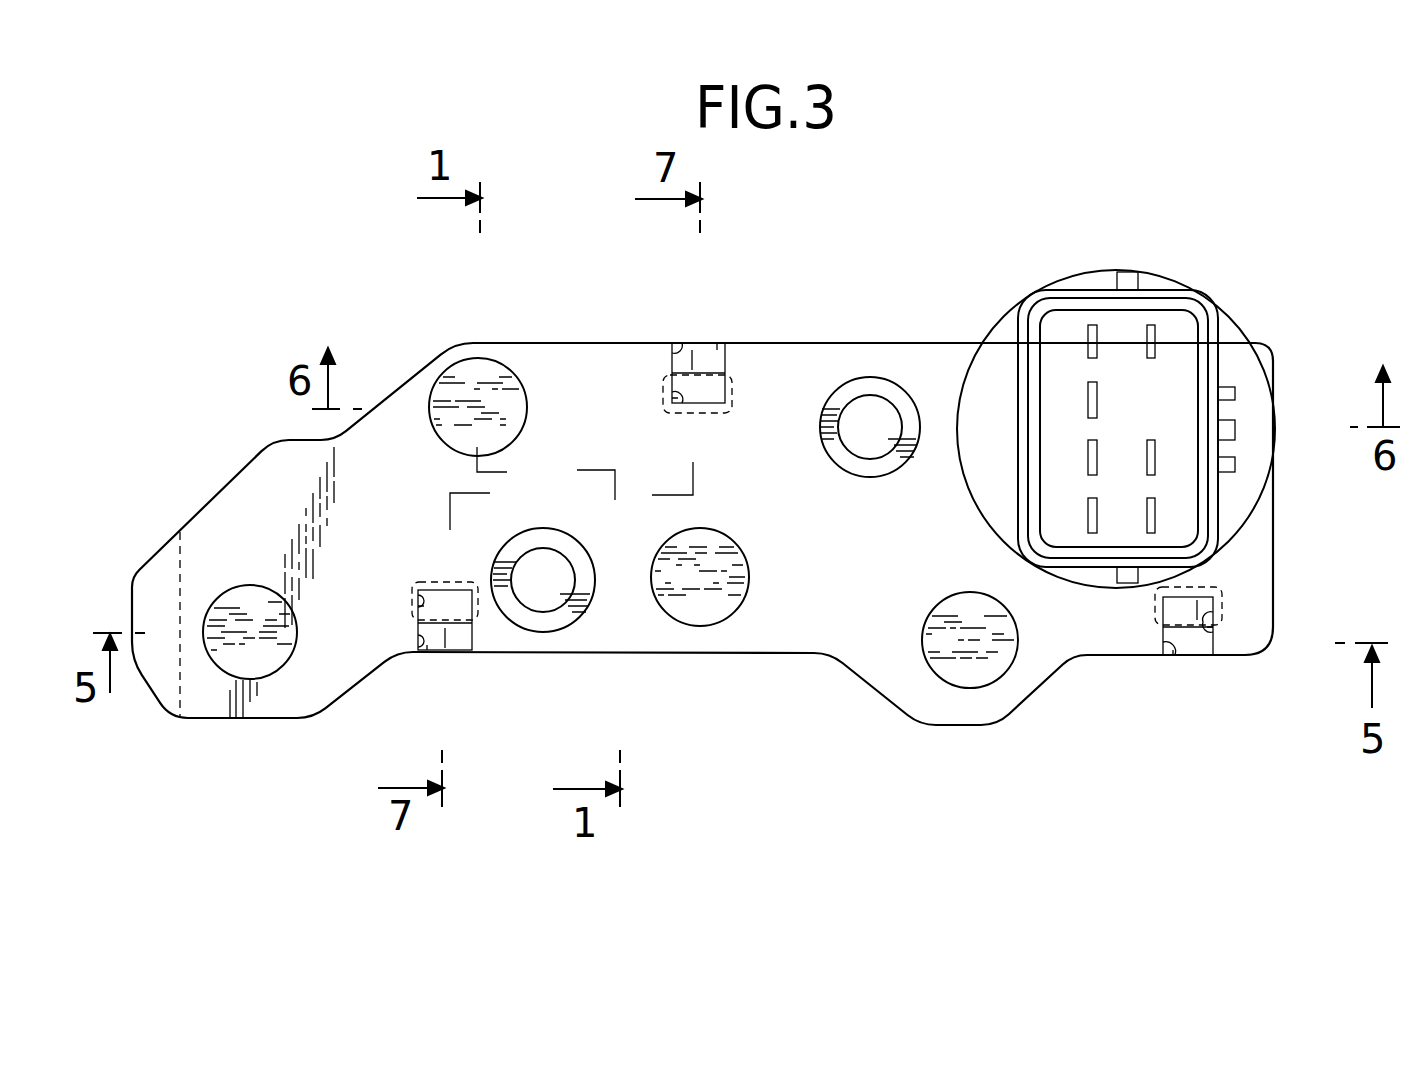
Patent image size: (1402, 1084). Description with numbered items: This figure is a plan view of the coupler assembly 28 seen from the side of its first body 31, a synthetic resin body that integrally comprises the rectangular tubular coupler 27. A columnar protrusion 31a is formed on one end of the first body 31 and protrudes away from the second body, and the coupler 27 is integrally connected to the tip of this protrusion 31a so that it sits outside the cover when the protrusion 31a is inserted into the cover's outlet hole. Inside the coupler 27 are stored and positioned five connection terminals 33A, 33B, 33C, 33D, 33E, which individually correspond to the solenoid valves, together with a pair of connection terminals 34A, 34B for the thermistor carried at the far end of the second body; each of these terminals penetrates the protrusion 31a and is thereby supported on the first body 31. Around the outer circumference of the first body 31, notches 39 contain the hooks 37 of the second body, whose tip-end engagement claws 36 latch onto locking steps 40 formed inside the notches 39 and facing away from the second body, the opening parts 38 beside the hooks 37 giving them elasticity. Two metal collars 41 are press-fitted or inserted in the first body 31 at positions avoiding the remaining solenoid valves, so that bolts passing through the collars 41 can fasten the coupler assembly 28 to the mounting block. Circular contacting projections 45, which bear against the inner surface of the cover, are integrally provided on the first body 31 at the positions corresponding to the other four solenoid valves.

The coupler 27 is at (1077, 287).
The coupler assembly 28 is at (833, 344).
The first body 31 is at (582, 358).
The protrusion 31a is at (1237, 347).
The connection terminal 33A is at (1157, 453).
The connection terminal 33B is at (1097, 340).
The connection terminal 33C is at (1092, 530).
The connection terminal 33D is at (1153, 513).
The connection terminal 33E is at (1157, 333).
The connection terminal 34A is at (1088, 460).
The connection terminal 34B is at (1088, 400).
The engagement claw 36 is at (447, 607).
The hook 37 is at (445, 638).
The opening part 38 is at (418, 612).
The notch 39 is at (427, 650).
The locking step 40 is at (462, 595).
The collar 41 is at (547, 620).
The contacting projection 45 is at (453, 427).